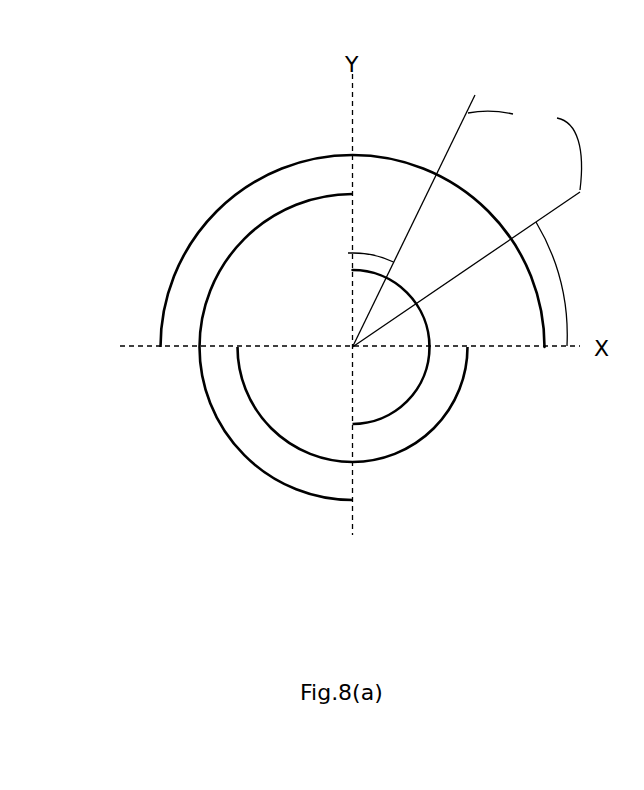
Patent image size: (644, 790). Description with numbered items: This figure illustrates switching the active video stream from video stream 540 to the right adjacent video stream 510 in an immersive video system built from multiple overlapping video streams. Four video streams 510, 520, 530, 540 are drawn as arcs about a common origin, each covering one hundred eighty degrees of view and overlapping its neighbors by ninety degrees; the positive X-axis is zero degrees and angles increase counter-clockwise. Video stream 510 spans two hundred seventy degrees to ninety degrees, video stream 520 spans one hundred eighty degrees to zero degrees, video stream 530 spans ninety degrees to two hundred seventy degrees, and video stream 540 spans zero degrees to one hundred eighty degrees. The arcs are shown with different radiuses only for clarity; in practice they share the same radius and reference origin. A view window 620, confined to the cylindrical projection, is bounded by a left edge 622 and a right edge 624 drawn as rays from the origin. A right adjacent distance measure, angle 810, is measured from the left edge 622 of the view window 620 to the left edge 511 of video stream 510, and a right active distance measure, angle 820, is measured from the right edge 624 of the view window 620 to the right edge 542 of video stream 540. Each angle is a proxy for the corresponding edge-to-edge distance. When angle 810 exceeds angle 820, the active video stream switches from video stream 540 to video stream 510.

The video stream 510 is at (427, 320).
The left edge of video stream 511 is at (353, 270).
The video stream 520 is at (397, 452).
The video stream 530 is at (277, 217).
The video stream 540 is at (363, 156).
The right edge of video stream 542 is at (545, 347).
The view window 620 is at (525, 150).
The left edge of view window 622 is at (450, 150).
The right edge of view window 624 is at (560, 202).
The angle 810 is at (373, 245).
The angle 820 is at (553, 251).